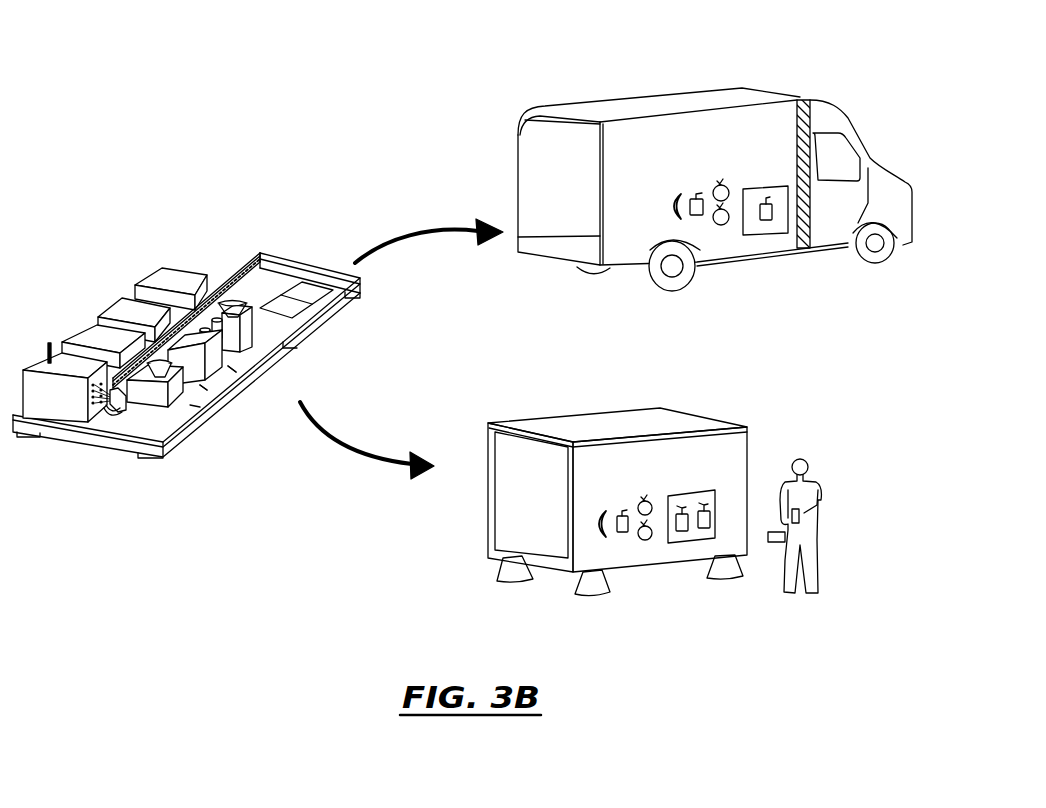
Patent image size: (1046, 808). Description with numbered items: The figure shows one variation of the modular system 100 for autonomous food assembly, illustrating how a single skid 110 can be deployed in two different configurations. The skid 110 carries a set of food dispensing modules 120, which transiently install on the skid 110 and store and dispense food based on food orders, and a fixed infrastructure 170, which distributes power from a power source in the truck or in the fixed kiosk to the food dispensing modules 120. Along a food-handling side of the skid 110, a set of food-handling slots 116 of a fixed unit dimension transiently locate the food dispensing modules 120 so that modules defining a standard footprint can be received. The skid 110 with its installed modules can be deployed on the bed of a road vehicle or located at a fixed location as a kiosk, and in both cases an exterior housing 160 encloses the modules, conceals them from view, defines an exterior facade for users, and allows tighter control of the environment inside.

The modular system 100 is at (185, 138).
The skid 110 is at (100, 444).
The food-handling slots 116 is at (233, 370).
The food dispensing modules 120 is at (247, 333).
The exterior housing 160 is at (663, 97).
The fixed infrastructure 170 is at (83, 333).